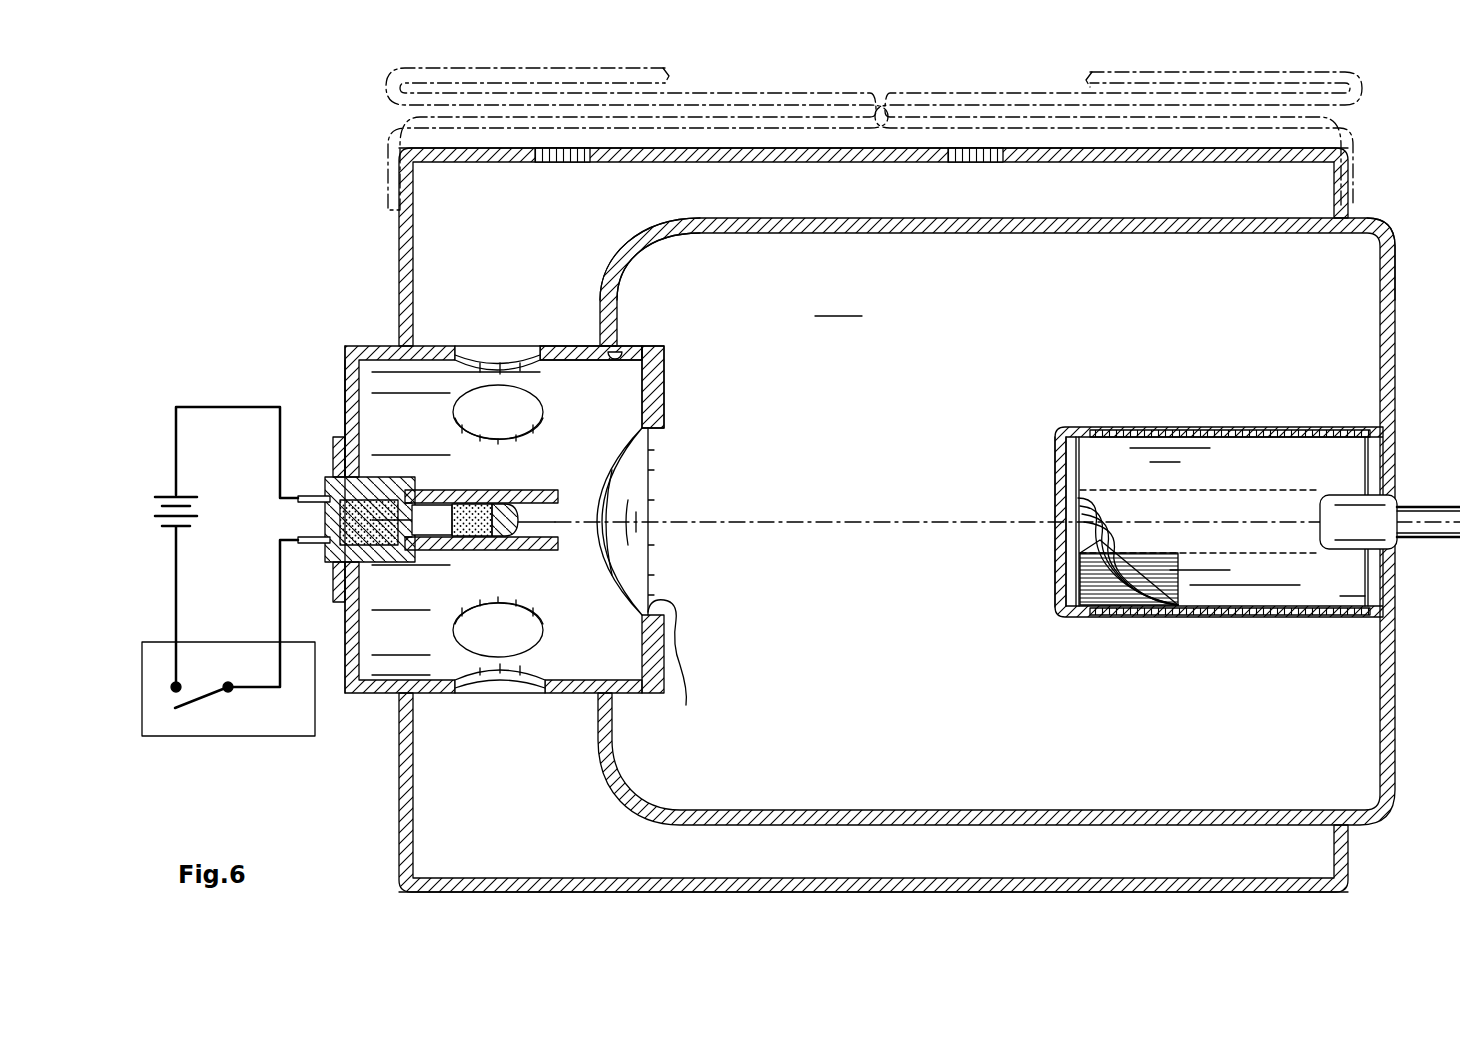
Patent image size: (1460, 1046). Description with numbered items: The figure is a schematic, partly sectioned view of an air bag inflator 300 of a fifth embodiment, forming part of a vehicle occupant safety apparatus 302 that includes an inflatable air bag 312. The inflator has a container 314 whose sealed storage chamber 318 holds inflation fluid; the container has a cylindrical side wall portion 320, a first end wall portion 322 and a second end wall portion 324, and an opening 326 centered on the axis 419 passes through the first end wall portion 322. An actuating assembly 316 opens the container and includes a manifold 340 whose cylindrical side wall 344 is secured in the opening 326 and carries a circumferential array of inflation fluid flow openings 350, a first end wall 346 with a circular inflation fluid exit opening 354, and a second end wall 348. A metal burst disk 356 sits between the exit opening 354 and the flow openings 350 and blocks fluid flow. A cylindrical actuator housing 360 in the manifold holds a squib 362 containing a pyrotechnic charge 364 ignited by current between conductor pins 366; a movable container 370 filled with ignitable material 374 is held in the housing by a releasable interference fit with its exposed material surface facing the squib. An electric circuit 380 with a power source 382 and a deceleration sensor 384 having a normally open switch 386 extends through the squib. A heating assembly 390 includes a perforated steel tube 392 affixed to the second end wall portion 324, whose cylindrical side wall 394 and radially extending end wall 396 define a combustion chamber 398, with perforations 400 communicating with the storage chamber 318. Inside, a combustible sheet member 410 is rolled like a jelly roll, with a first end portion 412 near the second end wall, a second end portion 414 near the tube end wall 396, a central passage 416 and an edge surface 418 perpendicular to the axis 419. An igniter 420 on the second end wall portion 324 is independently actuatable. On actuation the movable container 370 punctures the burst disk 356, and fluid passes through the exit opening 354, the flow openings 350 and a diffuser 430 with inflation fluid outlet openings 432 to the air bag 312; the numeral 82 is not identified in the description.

The laser beam 82 is at (552, 524).
The air bag inflator 300 is at (256, 287).
The vehicle occupant safety apparatus 302 is at (243, 220).
The air bag 312 is at (393, 92).
The container 314 is at (612, 262).
The actuating assembly 316 is at (312, 406).
The storage chamber 318 is at (838, 304).
The cylindrical side wall portion 320 is at (1102, 233).
The first end wall portion 322 is at (623, 290).
The second end wall portion 324 is at (1392, 272).
The opening 326 is at (628, 350).
The manifold 340 is at (356, 340).
The cylindrical side wall 344 is at (584, 356).
The first end wall 346 is at (668, 385).
The second end wall 348 is at (353, 408).
The inflation fluid flow openings 350 is at (492, 360).
The inflation fluid exit opening 354 is at (677, 664).
The burst disk 356 is at (614, 594).
The actuator housing 360 is at (386, 478).
The squib 362 is at (408, 516).
The pyrotechnic charge 364 is at (376, 545).
The conductor pins 366 is at (298, 540).
The movable container 370 is at (516, 545).
The ignitable material 374 is at (464, 540).
The electric circuit 380 is at (228, 402).
The power source 382 is at (168, 505).
The deceleration sensor 384 is at (200, 736).
The normally open switch 386 is at (208, 697).
The heating assembly 390 is at (1032, 458).
The perforated steel tube 392 is at (1056, 588).
The cylindrical side wall 394 is at (1110, 620).
The end wall 396 is at (1056, 536).
The combustion chamber 398 is at (1072, 455).
The perforations 400 is at (1290, 432).
The combustible sheet member 410 is at (1180, 446).
The first end portion 412 is at (1326, 478).
The second end portion 414 is at (1110, 470).
The central passage 416 is at (1086, 506).
The edge surface 418 is at (1362, 606).
The axis 419 is at (796, 520).
The igniter 420 is at (1350, 508).
The diffuser 430 is at (402, 262).
The inflation fluid outlet openings 432 is at (565, 160).